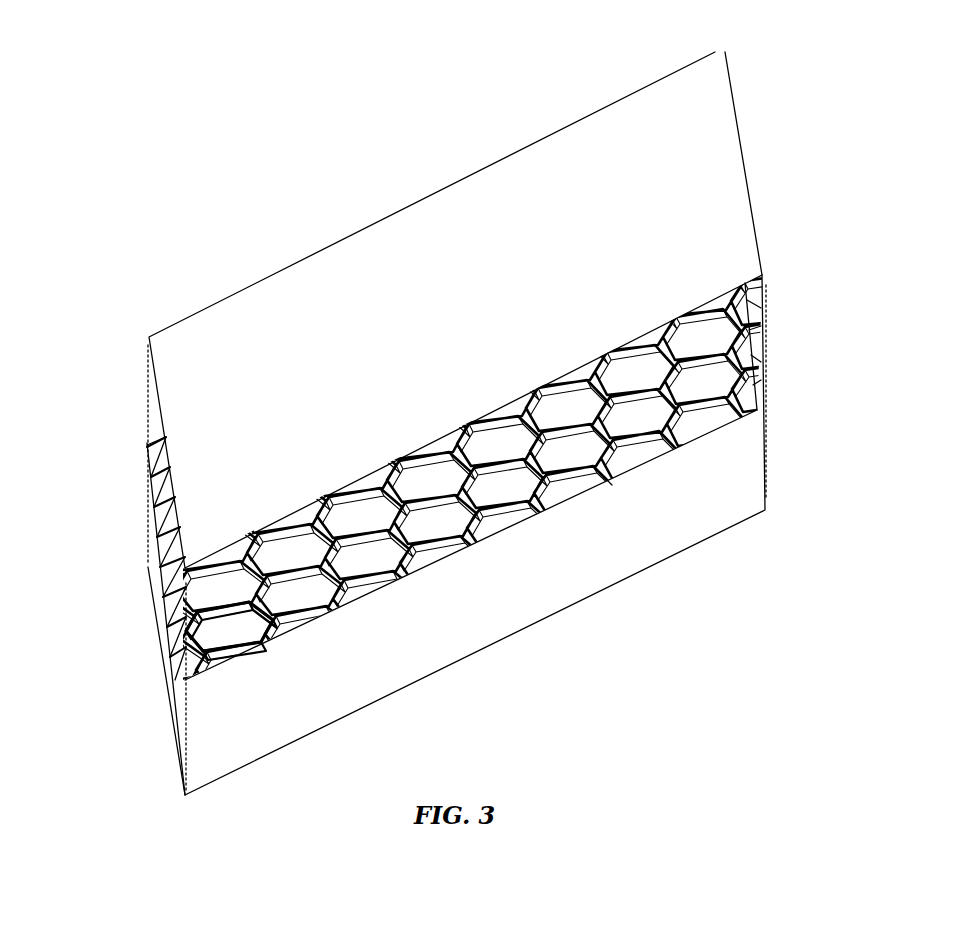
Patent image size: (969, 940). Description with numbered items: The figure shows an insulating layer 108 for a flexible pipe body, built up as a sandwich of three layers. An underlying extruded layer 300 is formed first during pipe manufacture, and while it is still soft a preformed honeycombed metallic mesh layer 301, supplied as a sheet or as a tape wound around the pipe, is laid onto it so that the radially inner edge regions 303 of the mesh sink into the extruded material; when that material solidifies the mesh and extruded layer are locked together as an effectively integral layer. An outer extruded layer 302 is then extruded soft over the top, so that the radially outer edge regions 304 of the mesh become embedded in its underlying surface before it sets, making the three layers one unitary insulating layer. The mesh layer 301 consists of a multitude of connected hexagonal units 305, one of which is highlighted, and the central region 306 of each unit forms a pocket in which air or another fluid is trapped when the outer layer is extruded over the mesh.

The insulating layer 108 is at (110, 514).
The underlying extruded layer 300 is at (590, 572).
The honeycombed metallic mesh layer 301 is at (745, 322).
The outer extruded layer 302 is at (562, 150).
The radially inner edge regions 303 is at (302, 618).
The radially outer edge regions 304 is at (433, 452).
The hexagonal unit 305 is at (213, 658).
The central region 306 is at (514, 464).